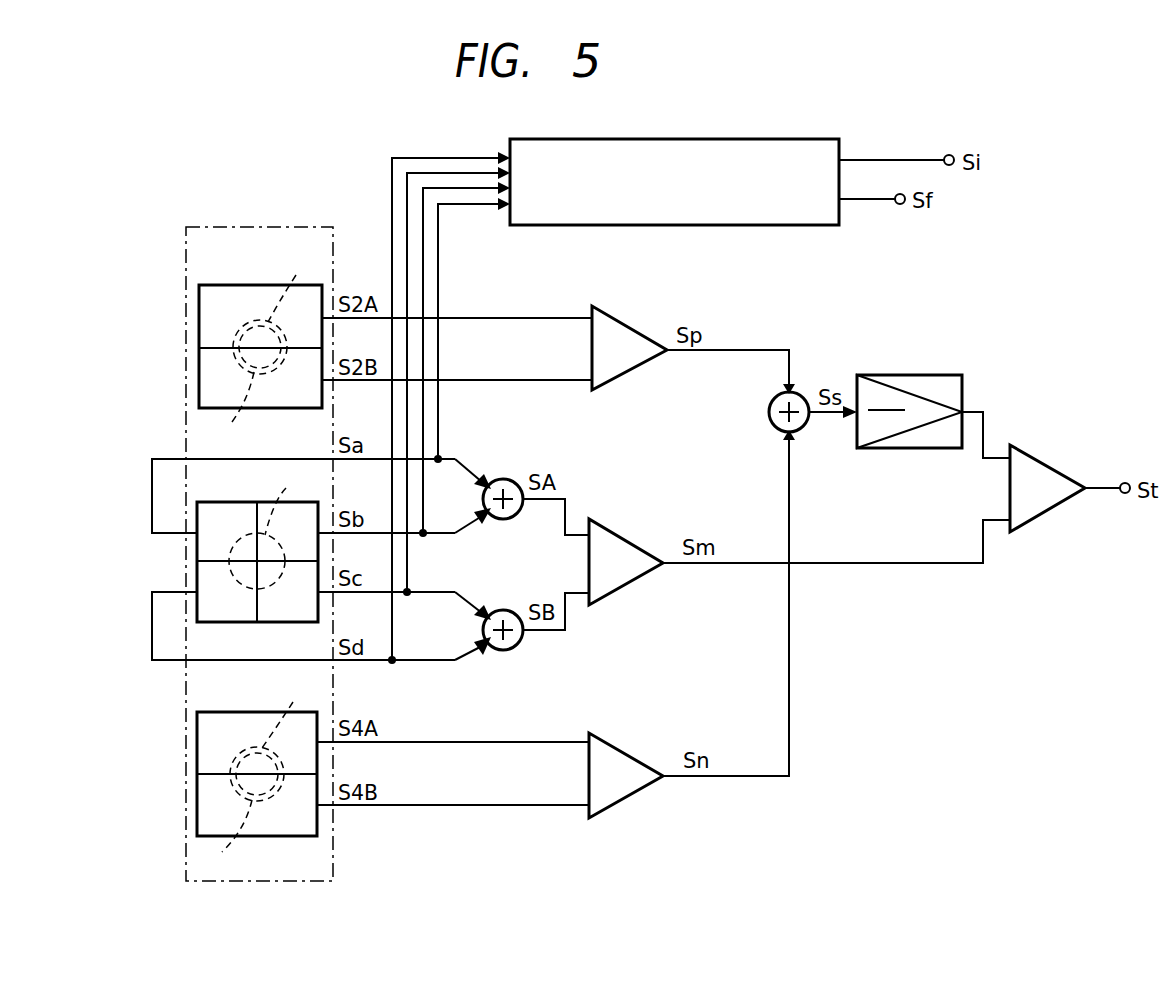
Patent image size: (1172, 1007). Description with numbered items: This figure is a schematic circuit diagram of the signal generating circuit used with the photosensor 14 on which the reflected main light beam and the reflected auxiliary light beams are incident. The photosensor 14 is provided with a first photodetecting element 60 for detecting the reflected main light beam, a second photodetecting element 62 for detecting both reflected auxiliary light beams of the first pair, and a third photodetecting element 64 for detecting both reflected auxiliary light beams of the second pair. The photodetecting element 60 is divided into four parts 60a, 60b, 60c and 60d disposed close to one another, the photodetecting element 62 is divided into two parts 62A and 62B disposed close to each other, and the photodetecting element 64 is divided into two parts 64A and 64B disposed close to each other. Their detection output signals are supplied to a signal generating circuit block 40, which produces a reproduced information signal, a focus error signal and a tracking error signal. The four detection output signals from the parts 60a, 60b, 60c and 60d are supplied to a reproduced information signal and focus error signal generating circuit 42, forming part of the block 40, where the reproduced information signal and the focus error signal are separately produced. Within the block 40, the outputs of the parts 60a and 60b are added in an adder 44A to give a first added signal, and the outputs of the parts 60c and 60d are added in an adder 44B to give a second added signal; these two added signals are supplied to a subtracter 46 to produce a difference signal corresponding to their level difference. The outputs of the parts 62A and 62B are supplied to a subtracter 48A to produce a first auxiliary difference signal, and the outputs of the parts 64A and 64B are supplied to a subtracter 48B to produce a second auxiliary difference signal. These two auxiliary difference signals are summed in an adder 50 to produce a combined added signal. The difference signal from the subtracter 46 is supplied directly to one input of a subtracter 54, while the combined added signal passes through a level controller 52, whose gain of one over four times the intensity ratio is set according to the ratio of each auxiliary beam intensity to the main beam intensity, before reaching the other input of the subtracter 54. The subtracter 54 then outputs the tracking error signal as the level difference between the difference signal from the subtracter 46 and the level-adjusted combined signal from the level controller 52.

The photosensor 14 is at (294, 226).
The signal generating circuit block 40 is at (922, 305).
The reproduced information signal and focus error signal generating circuit 42 is at (800, 138).
The adder 44A is at (516, 478).
The adder 44B is at (510, 648).
The subtracter 46 is at (628, 540).
The subtracter 48A is at (630, 324).
The subtracter 48B is at (626, 752).
The adder 50 is at (772, 426).
The level controller 52 is at (878, 450).
The subtracter 54 is at (1044, 458).
The first photodetecting element 60 is at (260, 541).
The part of first photodetecting element 60a is at (227, 531).
The part of first photodetecting element 60b is at (287, 531).
The part of first photodetecting element 60c is at (287, 591).
The part of first photodetecting element 60d is at (227, 591).
The second photodetecting element 62 is at (262, 340).
The part of second photodetecting element 62A is at (260, 316).
The part of second photodetecting element 62B is at (260, 378).
The third photodetecting element 64 is at (261, 775).
The part of third photodetecting element 64A is at (257, 743).
The part of third photodetecting element 64B is at (257, 805).